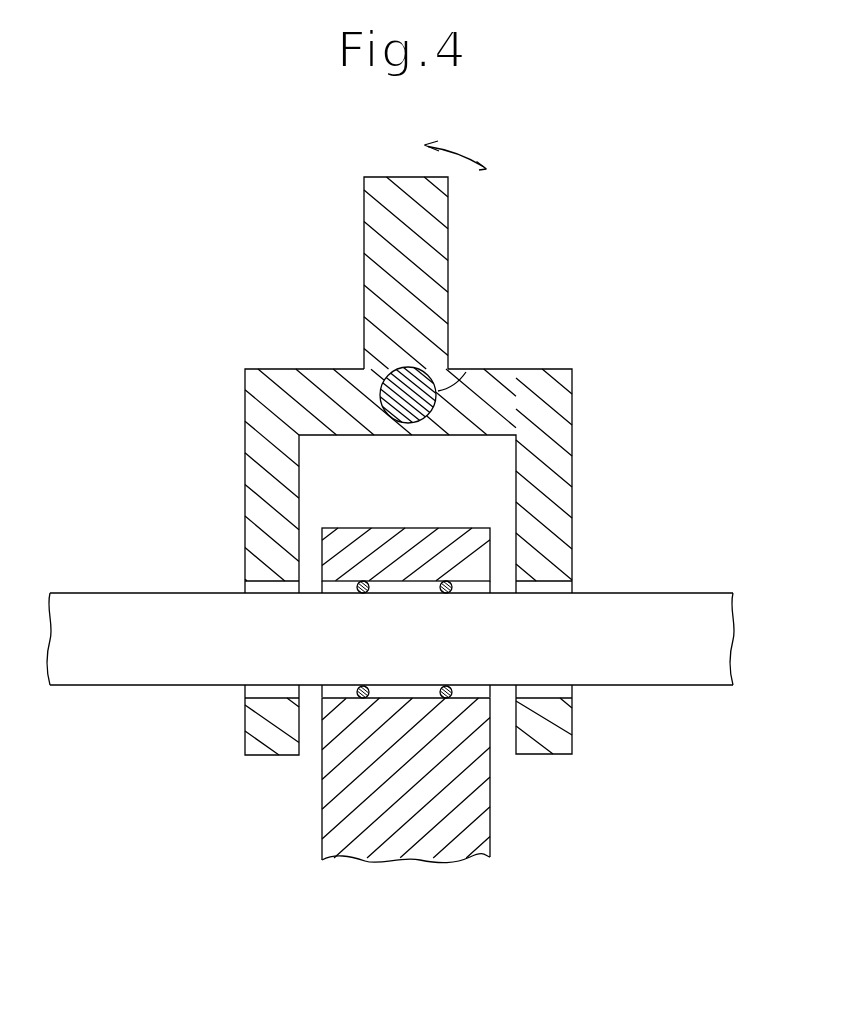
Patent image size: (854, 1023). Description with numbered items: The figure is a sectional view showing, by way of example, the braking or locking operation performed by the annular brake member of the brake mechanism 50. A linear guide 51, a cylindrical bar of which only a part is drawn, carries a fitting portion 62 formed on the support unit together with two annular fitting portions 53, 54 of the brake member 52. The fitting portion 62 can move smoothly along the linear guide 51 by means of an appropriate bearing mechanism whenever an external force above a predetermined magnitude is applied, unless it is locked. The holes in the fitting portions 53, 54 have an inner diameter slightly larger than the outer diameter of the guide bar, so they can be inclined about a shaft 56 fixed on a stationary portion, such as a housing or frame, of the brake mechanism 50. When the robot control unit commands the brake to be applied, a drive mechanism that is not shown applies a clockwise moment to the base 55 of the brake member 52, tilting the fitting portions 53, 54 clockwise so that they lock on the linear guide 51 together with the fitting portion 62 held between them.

The brake mechanism 50 is at (663, 390).
The linear guide 51 is at (662, 591).
The brake member 52 is at (293, 360).
The annular fitting portion 53 is at (573, 728).
The annular fitting portion 54 is at (245, 721).
The base 55 is at (373, 213).
The shaft 56 is at (458, 382).
The fitting portion 62 is at (492, 816).